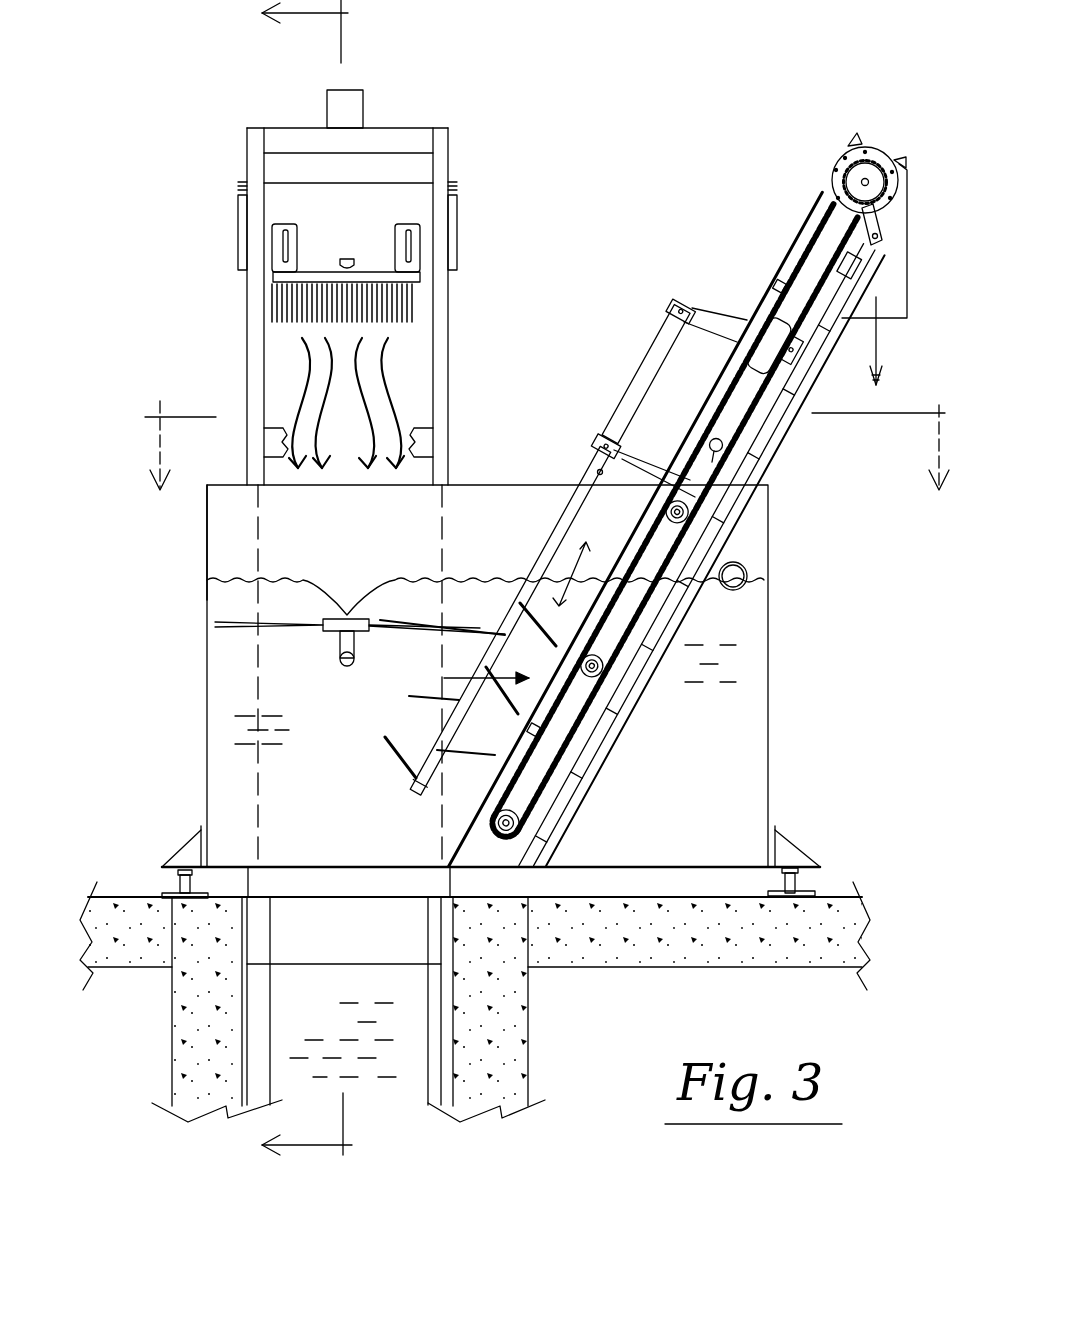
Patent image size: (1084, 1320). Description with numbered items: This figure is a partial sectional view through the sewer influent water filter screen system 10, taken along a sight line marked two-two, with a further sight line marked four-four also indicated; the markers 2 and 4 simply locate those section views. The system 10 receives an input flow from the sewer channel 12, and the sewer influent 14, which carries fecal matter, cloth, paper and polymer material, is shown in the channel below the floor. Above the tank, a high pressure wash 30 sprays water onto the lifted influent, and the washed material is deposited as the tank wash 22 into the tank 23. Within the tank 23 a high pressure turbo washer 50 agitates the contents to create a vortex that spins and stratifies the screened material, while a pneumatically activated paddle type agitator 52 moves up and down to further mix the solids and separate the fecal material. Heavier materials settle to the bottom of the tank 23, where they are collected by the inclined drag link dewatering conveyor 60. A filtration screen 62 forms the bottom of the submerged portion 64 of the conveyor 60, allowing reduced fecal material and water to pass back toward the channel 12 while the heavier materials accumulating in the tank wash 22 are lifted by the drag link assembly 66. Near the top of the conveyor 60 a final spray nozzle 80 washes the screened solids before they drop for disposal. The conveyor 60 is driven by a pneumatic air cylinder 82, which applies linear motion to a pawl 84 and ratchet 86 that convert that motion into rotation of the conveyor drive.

The section line 2- 2 is at (545, 464).
The section line 4- 4 is at (295, 598).
The sewer influent water filter screen system 10 is at (640, 115).
The sewer channel 12 is at (455, 945).
The sewer influent 14 is at (314, 1016).
The tank wash 22 is at (300, 738).
The tank 23 is at (206, 543).
The high pressure wash 30 is at (420, 277).
The high pressure turbo washer 50 is at (328, 633).
The paddle type agitator 52 is at (568, 526).
The drag link dewatering conveyor 60 is at (688, 437).
The filtration screen 62 is at (640, 695).
The submerged portion 64 is at (574, 794).
The drag link assembly 66 is at (798, 273).
The final spray nozzle 80 is at (724, 442).
The pneumatic air cylinder 82 is at (820, 328).
The pawl 84 is at (878, 226).
The ratchet 86 is at (843, 172).